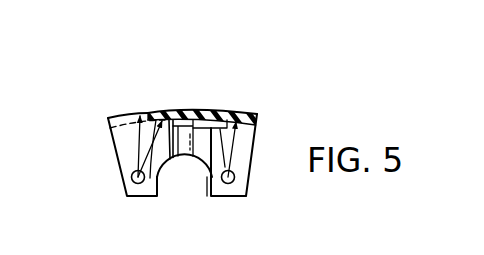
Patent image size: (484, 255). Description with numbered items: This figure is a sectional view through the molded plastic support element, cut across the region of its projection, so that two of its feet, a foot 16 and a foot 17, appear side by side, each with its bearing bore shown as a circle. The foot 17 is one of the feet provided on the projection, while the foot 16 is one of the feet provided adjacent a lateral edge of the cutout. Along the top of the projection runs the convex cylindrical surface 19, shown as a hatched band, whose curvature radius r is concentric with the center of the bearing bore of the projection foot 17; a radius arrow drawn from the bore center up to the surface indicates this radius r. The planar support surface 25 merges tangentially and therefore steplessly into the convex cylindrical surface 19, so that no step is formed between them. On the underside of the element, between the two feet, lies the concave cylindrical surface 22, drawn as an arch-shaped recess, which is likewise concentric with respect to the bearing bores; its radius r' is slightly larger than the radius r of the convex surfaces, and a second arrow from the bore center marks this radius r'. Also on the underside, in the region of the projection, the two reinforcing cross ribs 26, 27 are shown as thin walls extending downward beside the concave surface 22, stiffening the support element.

The foot 16 is at (125, 147).
The foot 17 is at (238, 163).
The convex cylindrical surface 19 is at (250, 113).
The concave cylindrical surface 22 is at (184, 175).
The planar support surface 25 is at (180, 112).
The cross rib 26 is at (216, 178).
The cross rib 27 is at (199, 158).
The curvature radius r is at (176, 150).
The radius r' is at (153, 126).